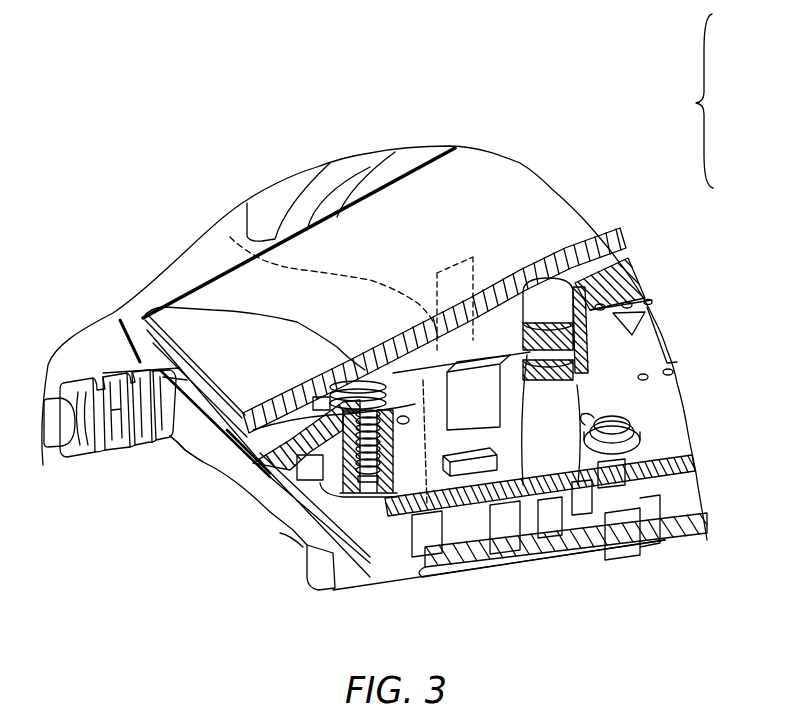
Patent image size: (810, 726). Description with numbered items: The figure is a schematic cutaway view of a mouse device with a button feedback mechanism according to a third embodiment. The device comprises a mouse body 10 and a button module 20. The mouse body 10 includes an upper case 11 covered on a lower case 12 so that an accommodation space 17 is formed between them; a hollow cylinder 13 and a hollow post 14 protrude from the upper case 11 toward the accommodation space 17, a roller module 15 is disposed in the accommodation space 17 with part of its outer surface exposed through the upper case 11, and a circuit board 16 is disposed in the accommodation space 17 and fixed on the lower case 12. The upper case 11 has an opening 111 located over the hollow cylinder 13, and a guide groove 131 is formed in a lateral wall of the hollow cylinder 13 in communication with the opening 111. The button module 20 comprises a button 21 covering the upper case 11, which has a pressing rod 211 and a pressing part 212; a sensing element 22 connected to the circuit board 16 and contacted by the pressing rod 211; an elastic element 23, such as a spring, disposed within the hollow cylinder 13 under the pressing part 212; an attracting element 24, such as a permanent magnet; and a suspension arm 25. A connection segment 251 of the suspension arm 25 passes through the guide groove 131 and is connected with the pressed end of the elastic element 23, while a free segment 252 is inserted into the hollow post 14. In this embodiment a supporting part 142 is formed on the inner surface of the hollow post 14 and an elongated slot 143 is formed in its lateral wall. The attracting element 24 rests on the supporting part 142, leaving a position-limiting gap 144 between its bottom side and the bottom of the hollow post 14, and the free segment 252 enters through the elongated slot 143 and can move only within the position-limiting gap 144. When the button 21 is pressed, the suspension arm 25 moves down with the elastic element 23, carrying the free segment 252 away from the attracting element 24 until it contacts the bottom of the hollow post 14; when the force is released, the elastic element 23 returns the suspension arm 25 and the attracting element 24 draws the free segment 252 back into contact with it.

The mouse body 10 is at (704, 101).
The upper case 11 is at (637, 268).
The lower case 12 is at (692, 523).
The hollow cylinder 13 is at (360, 490).
The hollow post 14 is at (583, 330).
The roller module 15 is at (345, 160).
The circuit board 16 is at (692, 462).
The accommodation space 17 is at (612, 400).
The button module 20 is at (133, 367).
The button 21 is at (283, 283).
The sensing element 22 is at (503, 547).
The elastic element 23 is at (313, 480).
The attracting element 24 is at (545, 320).
The suspension arm 25 is at (455, 550).
The opening 111 is at (253, 430).
The guide groove 131 is at (253, 460).
The supporting part 142 is at (585, 352).
The elongated slot 143 is at (566, 530).
The position-limiting gap 144 is at (608, 540).
The pressing rod 211 is at (230, 237).
The pressing part 212 is at (153, 297).
The connection segment 251 is at (397, 500).
The free segment 252 is at (507, 293).